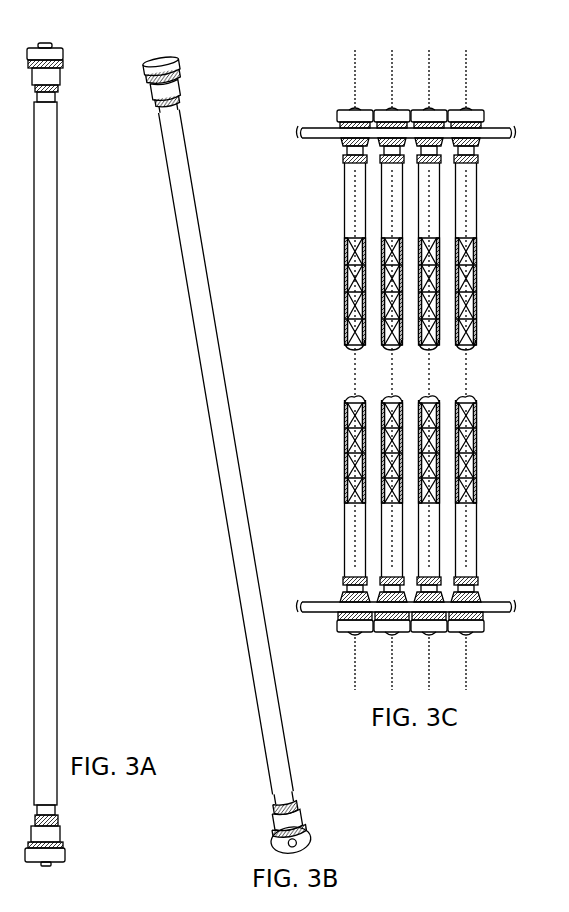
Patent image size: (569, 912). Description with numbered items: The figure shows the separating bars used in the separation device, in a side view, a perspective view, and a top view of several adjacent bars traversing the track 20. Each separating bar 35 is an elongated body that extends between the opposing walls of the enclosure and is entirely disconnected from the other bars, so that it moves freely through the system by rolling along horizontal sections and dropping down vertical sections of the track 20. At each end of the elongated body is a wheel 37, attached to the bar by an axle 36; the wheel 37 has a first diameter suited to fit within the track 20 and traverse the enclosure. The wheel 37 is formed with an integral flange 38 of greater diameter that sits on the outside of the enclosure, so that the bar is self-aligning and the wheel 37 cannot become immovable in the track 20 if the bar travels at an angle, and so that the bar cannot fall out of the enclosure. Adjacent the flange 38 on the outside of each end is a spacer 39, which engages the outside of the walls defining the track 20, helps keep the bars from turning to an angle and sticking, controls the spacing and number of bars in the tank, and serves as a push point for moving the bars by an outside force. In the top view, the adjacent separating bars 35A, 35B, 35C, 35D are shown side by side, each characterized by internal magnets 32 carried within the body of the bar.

In FIG. 3C, the track 20 is at (504, 129).
In FIG. 3C, the magnets 32 is at (477, 258).
In FIG. 3A, the separating bar 35 is at (45, 426).
In FIG. 3B, the separating bar 35 is at (226, 388).
In FIG. 3C, the separating bar 35A is at (355, 363).
In FIG. 3C, the separating bar 35B is at (392, 363).
In FIG. 3C, the separating bar 35C is at (429, 363).
In FIG. 3C, the separating bar 35D is at (490, 356).
In FIG. 3A, the axle 36 is at (56, 100).
In FIG. 3C, the axle 36 is at (478, 156).
In FIG. 3A, the wheel 37 is at (61, 78).
In FIG. 3A, the flange 38 is at (64, 63).
In FIG. 3C, the flange 38 is at (486, 126).
In FIG. 3A, the spacer 39 is at (57, 52).
In FIG. 3C, the spacer 39 is at (478, 116).